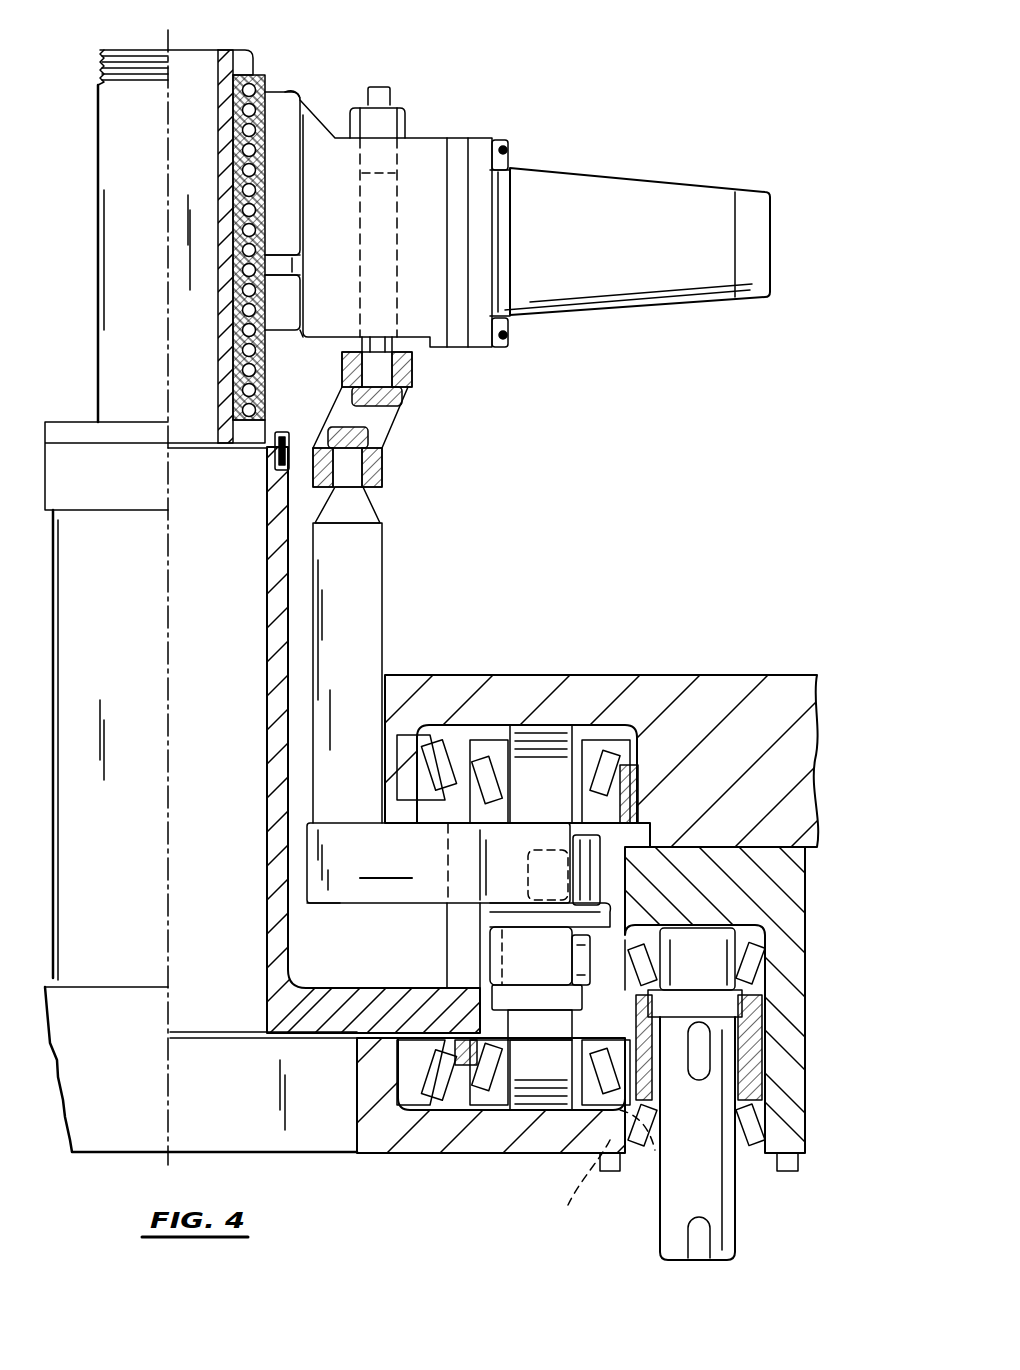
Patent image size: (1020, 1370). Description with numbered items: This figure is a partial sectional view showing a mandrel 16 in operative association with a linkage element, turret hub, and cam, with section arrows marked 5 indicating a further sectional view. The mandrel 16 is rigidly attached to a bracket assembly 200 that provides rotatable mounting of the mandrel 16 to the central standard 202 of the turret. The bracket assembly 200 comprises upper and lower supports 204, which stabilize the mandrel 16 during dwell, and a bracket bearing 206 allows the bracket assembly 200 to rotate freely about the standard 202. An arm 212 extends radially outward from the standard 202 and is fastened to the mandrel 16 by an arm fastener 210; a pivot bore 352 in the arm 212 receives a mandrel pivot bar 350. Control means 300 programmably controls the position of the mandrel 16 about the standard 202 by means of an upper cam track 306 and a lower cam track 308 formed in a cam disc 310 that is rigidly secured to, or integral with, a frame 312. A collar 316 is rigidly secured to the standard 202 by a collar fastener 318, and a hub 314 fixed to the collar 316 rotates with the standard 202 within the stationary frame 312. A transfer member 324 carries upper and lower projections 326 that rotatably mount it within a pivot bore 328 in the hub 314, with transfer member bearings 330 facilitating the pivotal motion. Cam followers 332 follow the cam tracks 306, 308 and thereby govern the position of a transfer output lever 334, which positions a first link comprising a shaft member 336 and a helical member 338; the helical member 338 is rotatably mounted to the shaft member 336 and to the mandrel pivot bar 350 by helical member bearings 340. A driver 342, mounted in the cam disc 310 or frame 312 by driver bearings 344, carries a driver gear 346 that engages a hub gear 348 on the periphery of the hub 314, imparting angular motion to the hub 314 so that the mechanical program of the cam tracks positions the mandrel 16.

The mandrel 16 is at (700, 151).
The bracket assembly 200 is at (560, 130).
The central standard 202 is at (98, 150).
The upper and lower supports 204 is at (296, 98).
The bracket bearing 206 is at (255, 92).
The arm fastener 210 is at (506, 138).
The arm 212 is at (430, 140).
The control means 300 is at (716, 666).
The upper cam track 306 is at (605, 872).
The lower cam track 308 is at (583, 950).
The cam disc 310 is at (805, 899).
The frame 312 is at (815, 712).
The hub 314 is at (618, 725).
The collar 316 is at (267, 680).
The collar fastener 318 is at (272, 462).
The transfer member 324 is at (438, 863).
The upper and lower projections 326 is at (545, 725).
The pivot bore 328 is at (455, 730).
The transfer member bearings 330 is at (638, 790).
The cam followers 332 is at (612, 893).
The transfer output lever 334 is at (362, 905).
The shaft member 336 is at (382, 556).
The helical member 338 is at (402, 422).
The helical member bearings 340 is at (412, 372).
The driver 342 is at (738, 1208).
The driver bearings 344 is at (765, 963).
The driver gear 346 is at (762, 1040).
The hub gear 348 is at (599, 1169).
The mandrel pivot bar 350 is at (362, 348).
The pivot bore 352 is at (355, 257).
The section line 5- 5 is at (68, 820).